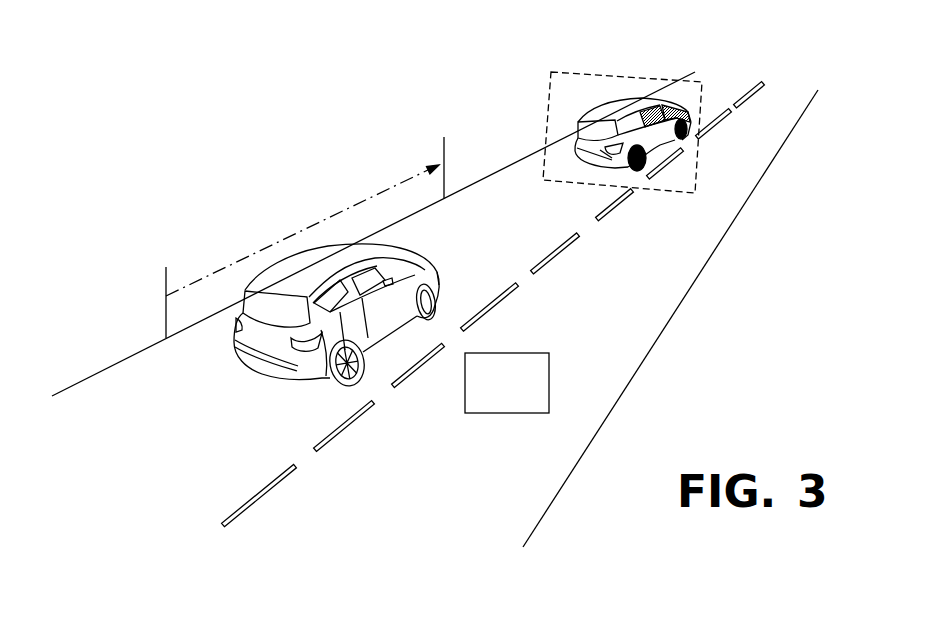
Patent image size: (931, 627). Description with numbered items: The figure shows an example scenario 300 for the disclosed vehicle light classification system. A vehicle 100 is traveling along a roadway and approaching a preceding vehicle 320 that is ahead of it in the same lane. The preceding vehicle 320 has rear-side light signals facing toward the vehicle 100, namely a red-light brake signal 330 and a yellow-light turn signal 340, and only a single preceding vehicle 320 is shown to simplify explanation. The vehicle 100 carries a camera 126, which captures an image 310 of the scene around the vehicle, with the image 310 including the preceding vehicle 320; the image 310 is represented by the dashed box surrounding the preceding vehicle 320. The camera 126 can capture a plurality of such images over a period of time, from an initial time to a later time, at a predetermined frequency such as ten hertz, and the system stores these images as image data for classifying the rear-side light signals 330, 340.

The example scenario 300 is at (195, 104).
The vehicle 100 is at (270, 376).
The camera 126 is at (486, 353).
The image 310 is at (555, 72).
The preceding vehicle 320 is at (657, 100).
The red-light brake signal 330 is at (623, 163).
The yellow-light turn signal 340 is at (575, 142).